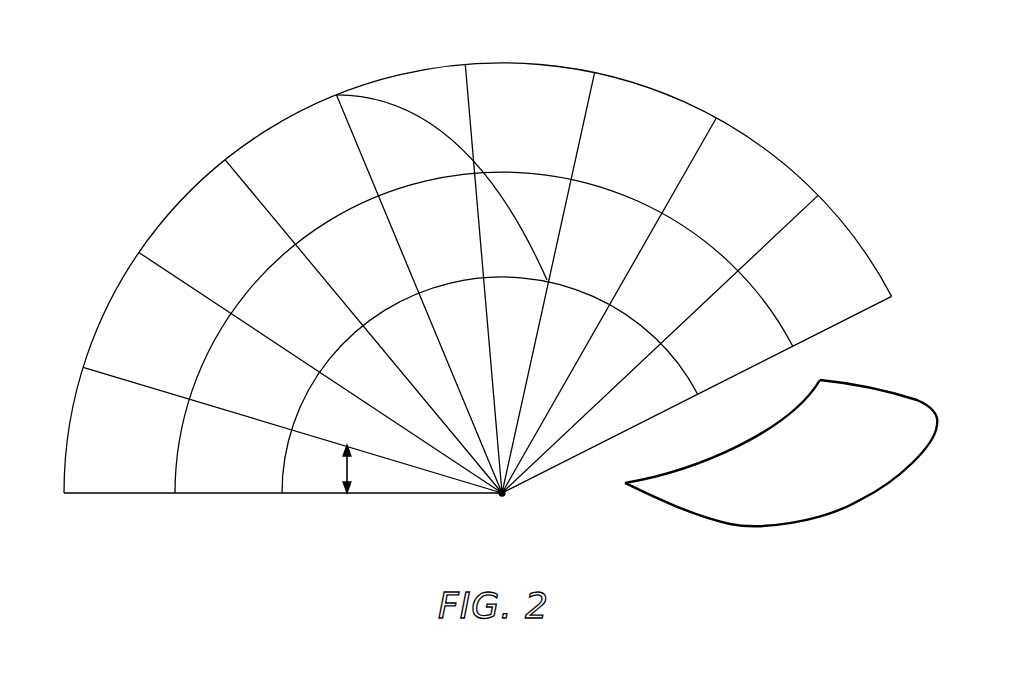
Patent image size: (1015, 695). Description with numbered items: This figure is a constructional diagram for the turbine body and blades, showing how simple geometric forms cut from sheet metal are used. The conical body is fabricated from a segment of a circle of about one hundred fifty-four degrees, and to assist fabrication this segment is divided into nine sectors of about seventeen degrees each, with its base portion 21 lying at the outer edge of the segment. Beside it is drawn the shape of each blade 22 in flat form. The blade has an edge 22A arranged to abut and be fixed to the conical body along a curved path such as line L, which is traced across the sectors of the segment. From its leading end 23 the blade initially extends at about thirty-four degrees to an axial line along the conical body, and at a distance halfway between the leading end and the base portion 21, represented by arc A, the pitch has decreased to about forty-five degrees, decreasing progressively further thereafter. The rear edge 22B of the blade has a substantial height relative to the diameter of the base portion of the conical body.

The base portion 21 is at (755, 140).
The blade 22 is at (803, 439).
The edge 22A is at (743, 450).
The rear edge 22B is at (880, 388).
The leading end 23 is at (620, 478).
The line L is at (487, 161).
The arc A is at (553, 175).